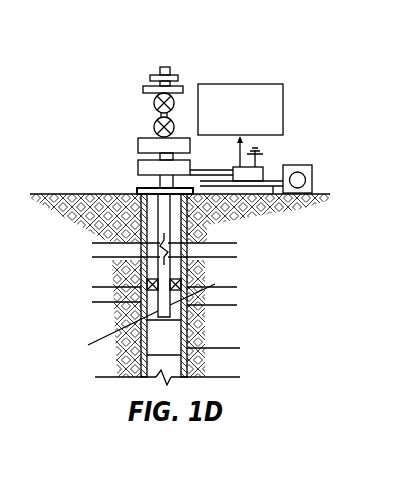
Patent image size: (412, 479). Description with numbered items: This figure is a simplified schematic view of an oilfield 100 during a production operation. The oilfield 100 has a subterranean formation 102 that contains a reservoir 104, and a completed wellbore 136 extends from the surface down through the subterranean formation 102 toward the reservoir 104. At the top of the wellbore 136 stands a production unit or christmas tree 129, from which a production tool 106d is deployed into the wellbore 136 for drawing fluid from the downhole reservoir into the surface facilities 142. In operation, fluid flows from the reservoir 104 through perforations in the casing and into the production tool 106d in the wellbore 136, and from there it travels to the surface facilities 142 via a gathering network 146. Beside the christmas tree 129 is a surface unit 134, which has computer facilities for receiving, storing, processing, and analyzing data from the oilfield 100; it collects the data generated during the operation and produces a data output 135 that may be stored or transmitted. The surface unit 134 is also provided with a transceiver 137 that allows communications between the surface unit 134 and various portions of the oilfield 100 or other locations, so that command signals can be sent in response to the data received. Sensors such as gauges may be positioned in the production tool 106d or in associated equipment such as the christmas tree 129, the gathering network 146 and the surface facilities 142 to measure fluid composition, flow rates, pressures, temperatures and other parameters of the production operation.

The oilfield 100 is at (97, 117).
The subterranean formation 102 is at (223, 276).
The reservoir 104 is at (243, 333).
The production tool 106d is at (120, 318).
The christmas tree 129 is at (164, 67).
The surface unit 134 is at (238, 167).
The data output 135 is at (263, 84).
The wellbore 136 is at (190, 217).
The transceiver 137 is at (259, 158).
The surface facilities 142 is at (310, 168).
The gathering network 146 is at (276, 200).